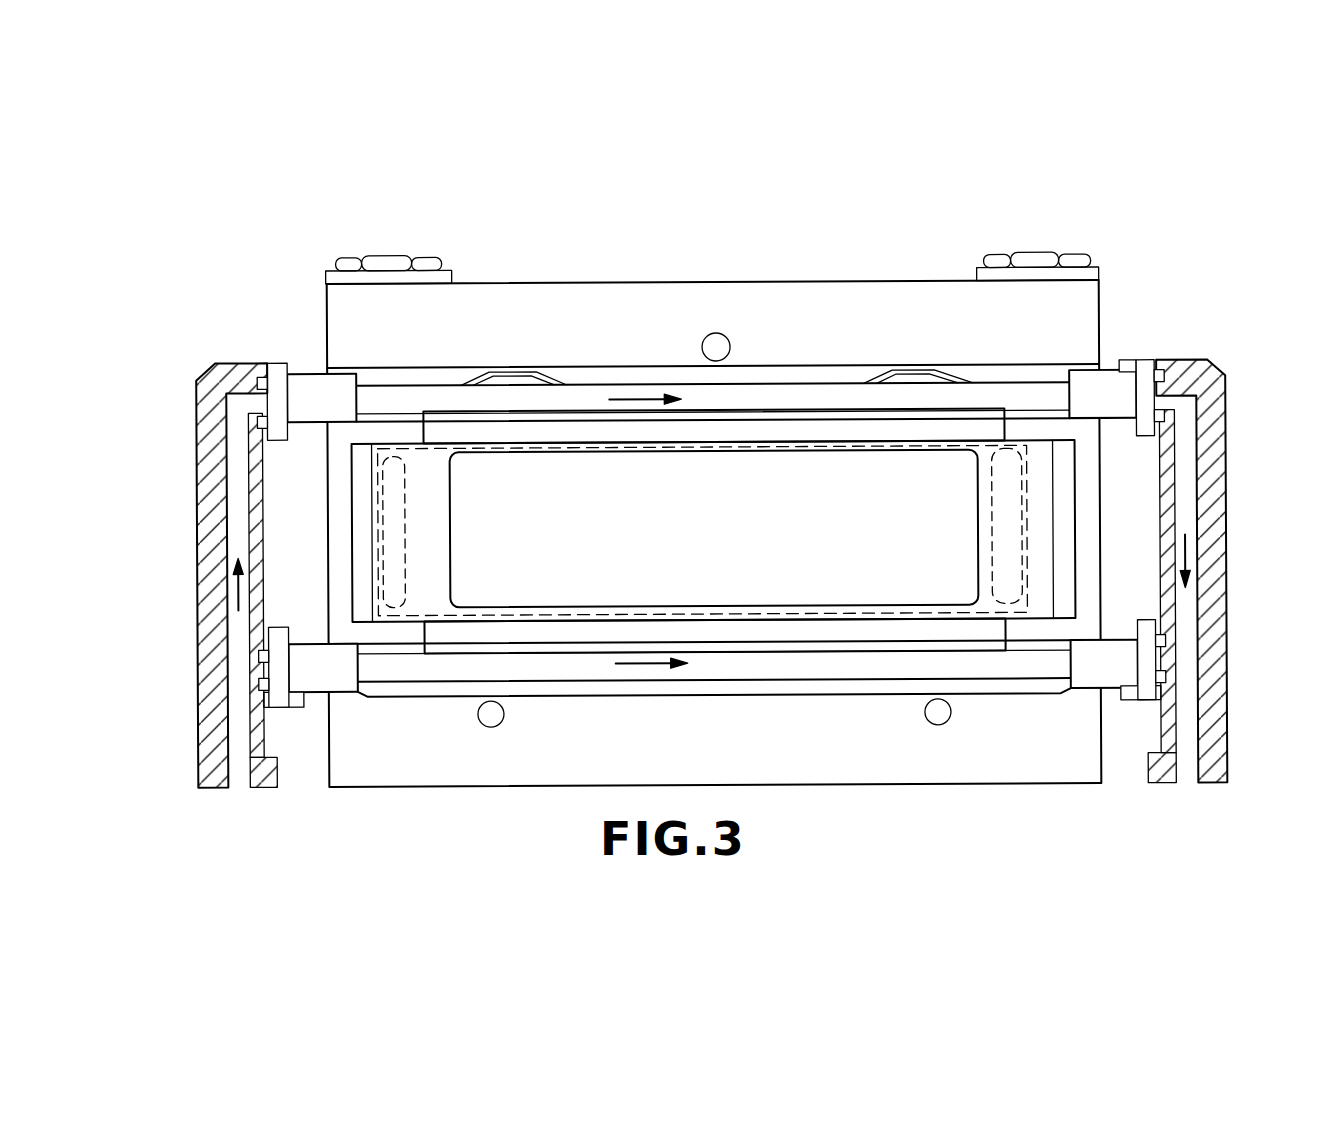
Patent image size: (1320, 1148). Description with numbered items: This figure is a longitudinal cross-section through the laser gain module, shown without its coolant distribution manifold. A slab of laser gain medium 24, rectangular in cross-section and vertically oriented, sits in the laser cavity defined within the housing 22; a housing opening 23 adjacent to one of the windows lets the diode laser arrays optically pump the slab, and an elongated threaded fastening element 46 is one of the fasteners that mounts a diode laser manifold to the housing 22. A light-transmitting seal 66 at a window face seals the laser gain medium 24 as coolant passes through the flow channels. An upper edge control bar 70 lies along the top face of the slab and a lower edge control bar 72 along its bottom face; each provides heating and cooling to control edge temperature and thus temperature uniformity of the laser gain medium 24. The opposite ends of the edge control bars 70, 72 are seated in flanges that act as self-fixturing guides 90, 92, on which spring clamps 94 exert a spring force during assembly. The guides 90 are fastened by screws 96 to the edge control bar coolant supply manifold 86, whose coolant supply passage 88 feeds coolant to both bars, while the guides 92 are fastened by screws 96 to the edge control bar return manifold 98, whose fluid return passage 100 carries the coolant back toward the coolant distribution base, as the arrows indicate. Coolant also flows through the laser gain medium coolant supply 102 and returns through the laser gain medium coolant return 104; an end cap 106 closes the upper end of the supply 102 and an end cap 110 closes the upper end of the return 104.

The housing 22 is at (1100, 332).
The housing opening 23 is at (978, 553).
The laser gain medium 24 is at (548, 580).
The elongated threaded fastening element 46 is at (265, 378).
The seal 66 is at (982, 625).
The upper edge control bar 70 is at (628, 386).
The lower edge control bar 72 is at (557, 681).
The edge control bar coolant supply manifold 86 is at (218, 361).
The coolant supply passage 88 is at (237, 520).
The self-fixturing guide 90 is at (317, 388).
The self-fixturing guide 92 is at (1120, 392).
The spring clamp 94 is at (548, 370).
The screw 96 is at (1210, 363).
The edge control bar return manifold 98 is at (1158, 372).
The fluid return passage 100 is at (1183, 513).
The laser gain medium coolant supply 102 is at (380, 590).
The laser gain medium coolant return 104 is at (1014, 440).
The end cap 106 is at (413, 258).
The end cap 110 is at (1047, 254).